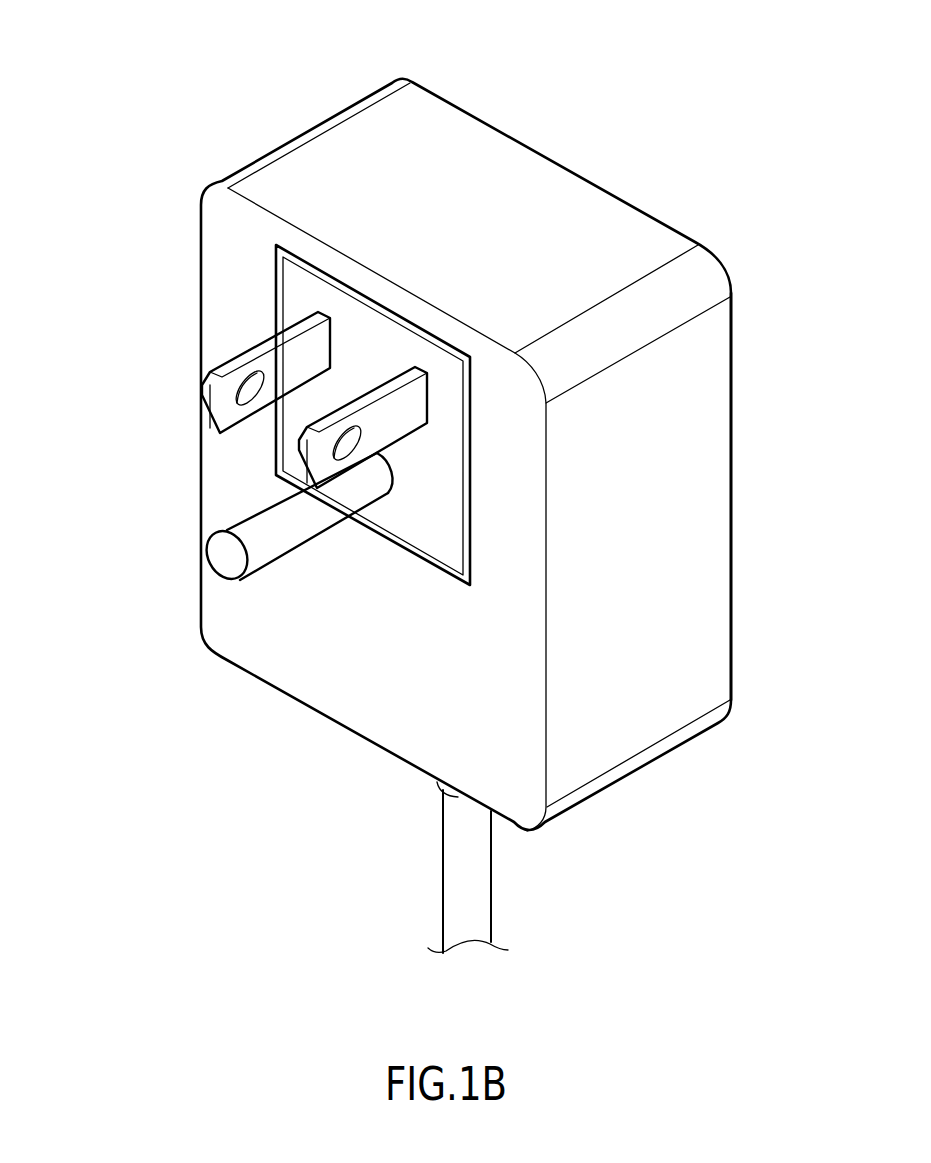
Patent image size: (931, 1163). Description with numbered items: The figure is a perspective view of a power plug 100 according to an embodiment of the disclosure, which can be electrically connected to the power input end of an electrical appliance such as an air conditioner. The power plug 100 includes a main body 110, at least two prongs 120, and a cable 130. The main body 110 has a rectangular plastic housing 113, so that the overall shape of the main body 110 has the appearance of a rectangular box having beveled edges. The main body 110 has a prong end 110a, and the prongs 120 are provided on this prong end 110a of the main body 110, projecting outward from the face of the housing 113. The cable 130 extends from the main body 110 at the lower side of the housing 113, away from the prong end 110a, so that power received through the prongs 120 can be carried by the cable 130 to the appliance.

The power plug 100 is at (553, 32).
The main body 110 is at (296, 115).
The prong end 110a is at (230, 245).
The housing 113 is at (733, 500).
The prongs 120 is at (300, 458).
The cable 130 is at (443, 875).